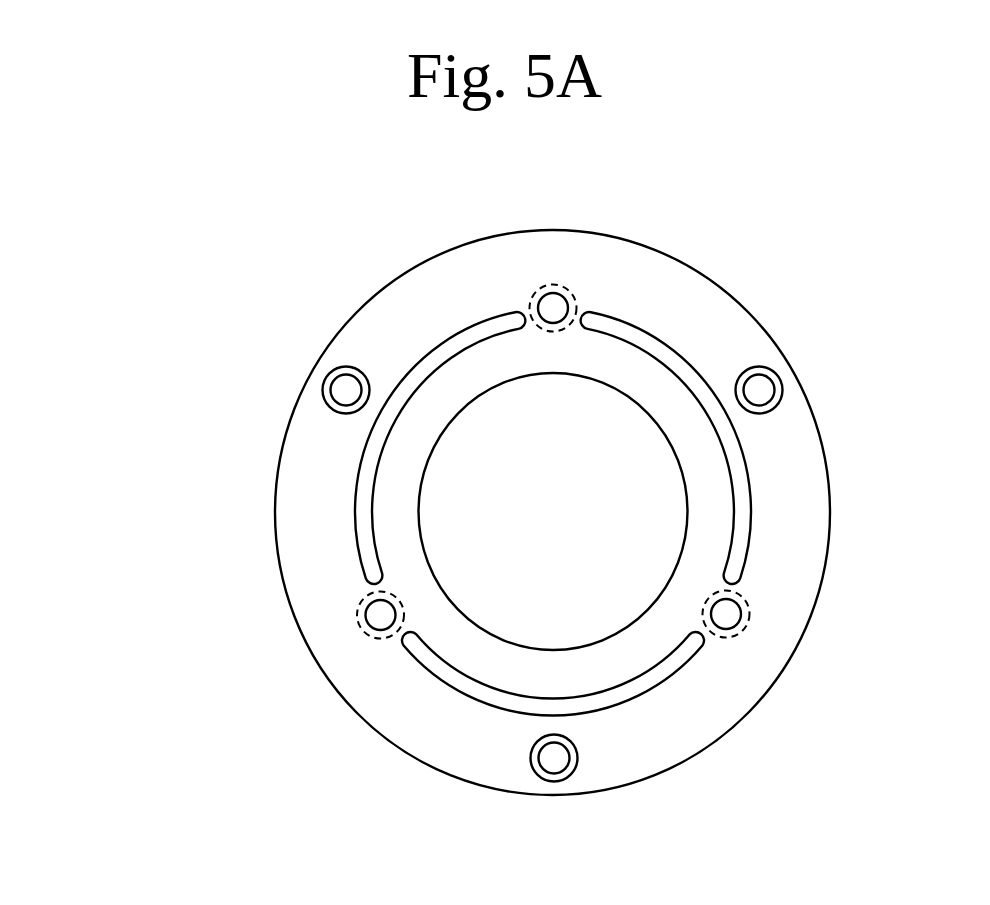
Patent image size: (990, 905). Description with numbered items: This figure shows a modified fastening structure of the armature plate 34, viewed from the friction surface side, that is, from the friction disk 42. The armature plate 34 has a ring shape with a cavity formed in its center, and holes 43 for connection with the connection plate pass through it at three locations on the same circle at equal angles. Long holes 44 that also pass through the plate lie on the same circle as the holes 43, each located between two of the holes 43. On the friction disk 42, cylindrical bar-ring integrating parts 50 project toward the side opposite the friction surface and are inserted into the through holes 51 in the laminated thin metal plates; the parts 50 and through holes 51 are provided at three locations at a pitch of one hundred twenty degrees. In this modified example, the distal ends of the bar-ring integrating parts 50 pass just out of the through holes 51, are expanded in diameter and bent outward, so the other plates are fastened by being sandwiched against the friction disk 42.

The armature plate 34 is at (803, 323).
The friction disk 42 is at (813, 500).
The holes for connection 43 is at (346, 392).
The long holes 44 is at (470, 330).
The bar-ring integrating parts 50 is at (553, 305).
The through holes 51 is at (536, 291).